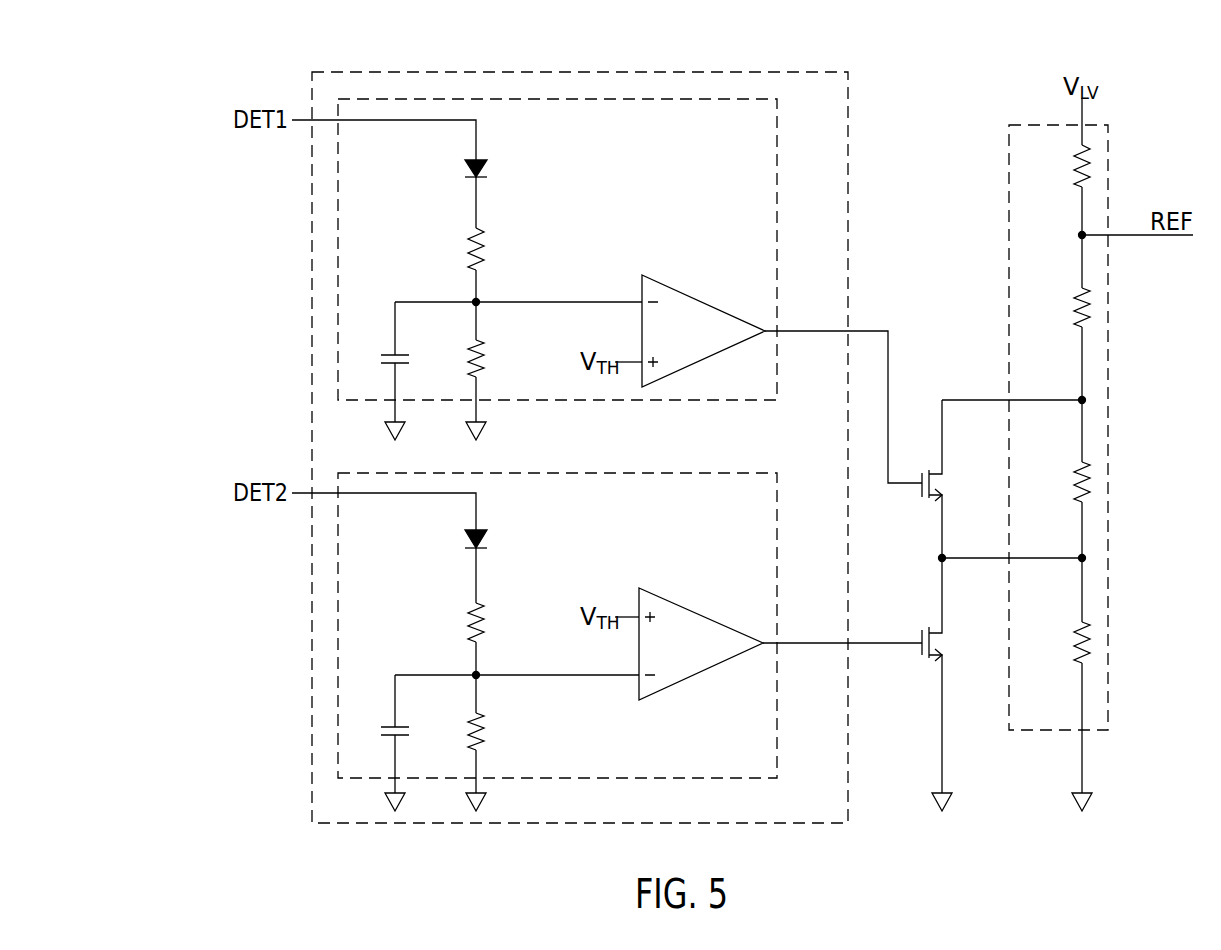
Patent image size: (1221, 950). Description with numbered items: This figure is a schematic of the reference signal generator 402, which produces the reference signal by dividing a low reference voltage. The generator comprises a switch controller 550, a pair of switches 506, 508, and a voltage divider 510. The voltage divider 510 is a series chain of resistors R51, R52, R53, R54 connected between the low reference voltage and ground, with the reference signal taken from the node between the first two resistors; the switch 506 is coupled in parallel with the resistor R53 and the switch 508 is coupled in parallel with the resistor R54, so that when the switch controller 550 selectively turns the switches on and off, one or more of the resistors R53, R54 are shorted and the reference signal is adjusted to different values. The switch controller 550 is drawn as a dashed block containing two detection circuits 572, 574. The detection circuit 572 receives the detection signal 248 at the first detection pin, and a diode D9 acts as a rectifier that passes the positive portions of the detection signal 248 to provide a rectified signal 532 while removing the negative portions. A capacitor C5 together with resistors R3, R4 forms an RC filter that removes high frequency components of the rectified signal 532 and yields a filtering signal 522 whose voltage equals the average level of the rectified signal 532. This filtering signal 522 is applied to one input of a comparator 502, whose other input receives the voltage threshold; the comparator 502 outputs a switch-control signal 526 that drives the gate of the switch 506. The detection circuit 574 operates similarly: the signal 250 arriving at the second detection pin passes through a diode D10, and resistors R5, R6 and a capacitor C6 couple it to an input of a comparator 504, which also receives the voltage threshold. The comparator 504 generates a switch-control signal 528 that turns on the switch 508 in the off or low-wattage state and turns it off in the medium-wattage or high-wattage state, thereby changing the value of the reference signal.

The reference signal generator 402 is at (148, 122).
The switch controller 550 is at (849, 193).
The detection circuit 572 is at (778, 148).
The detection circuit 574 is at (778, 509).
The detection signal 248 is at (429, 121).
The second detector input line DET2 250 is at (429, 494).
The diode D9 is at (483, 163).
The diode D10 is at (483, 531).
The rectified signal 532 is at (477, 210).
The resistor R3 is at (474, 230).
The resistor R4 is at (474, 350).
The resistor R5 is at (474, 614).
The resistor R6 is at (474, 735).
The capacitor C5 is at (383, 354).
The capacitor C6 is at (383, 727).
The filtering signal 522 is at (573, 302).
The comparator 502 is at (675, 291).
The comparator 504 is at (674, 603).
The switch-control signal 526 is at (790, 331).
The switch-control signal 528 is at (790, 643).
The switch 506 is at (921, 498).
The switch 508 is at (921, 656).
The voltage divider 510 is at (1110, 393).
The resistor R51 is at (1061, 166).
The resistor R52 is at (1061, 307).
The resistor R53 is at (1061, 482).
The resistor R54 is at (1061, 642).